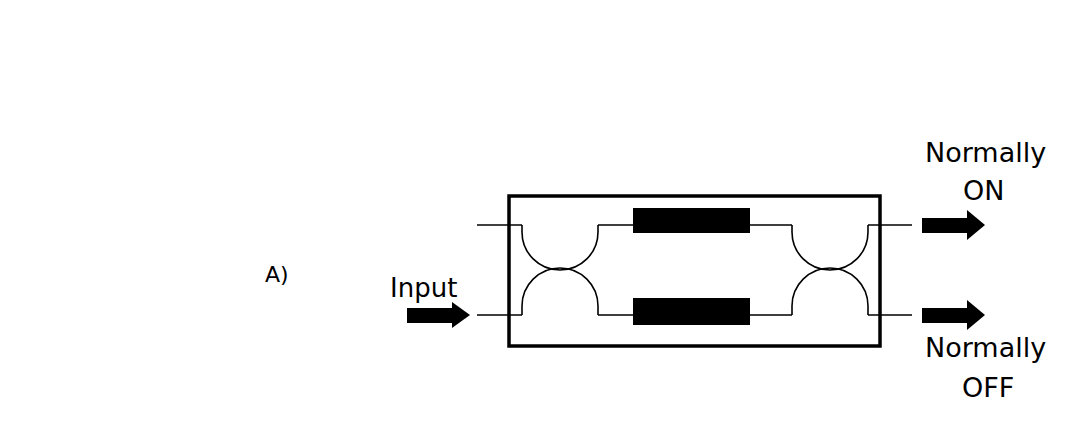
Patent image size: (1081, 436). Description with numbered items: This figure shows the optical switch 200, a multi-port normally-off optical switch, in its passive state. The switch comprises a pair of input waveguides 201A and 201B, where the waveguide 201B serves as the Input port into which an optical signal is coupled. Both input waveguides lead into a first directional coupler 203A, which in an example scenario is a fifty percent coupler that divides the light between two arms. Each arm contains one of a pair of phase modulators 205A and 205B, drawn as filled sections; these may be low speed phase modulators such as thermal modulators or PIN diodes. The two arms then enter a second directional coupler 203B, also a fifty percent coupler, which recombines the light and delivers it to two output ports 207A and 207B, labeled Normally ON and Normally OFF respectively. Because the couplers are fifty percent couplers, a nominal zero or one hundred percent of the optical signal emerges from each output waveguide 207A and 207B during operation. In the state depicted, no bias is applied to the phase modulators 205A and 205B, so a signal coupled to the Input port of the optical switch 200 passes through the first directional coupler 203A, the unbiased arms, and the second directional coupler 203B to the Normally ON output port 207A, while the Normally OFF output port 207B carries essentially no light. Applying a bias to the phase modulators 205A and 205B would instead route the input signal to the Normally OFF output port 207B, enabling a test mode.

The optical switch 200 is at (401, 94).
The input waveguide 201A is at (495, 224).
The input waveguide 201B is at (494, 318).
The first directional coupler 203A is at (554, 268).
The second directional coupler 203B is at (833, 268).
The phase modulator 205A is at (689, 208).
The phase modulator 205B is at (672, 325).
The output port 207A is at (896, 223).
The output port 207B is at (893, 318).